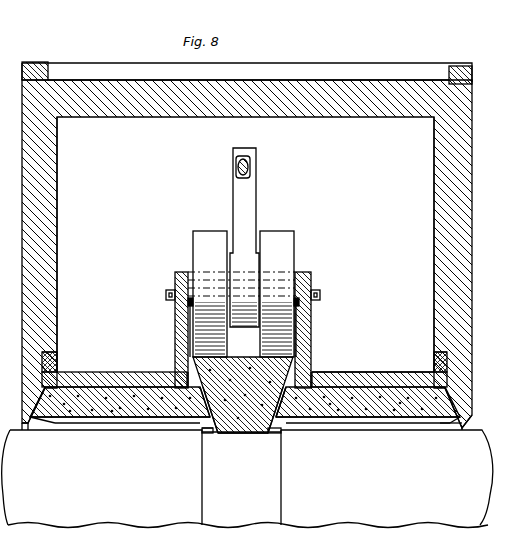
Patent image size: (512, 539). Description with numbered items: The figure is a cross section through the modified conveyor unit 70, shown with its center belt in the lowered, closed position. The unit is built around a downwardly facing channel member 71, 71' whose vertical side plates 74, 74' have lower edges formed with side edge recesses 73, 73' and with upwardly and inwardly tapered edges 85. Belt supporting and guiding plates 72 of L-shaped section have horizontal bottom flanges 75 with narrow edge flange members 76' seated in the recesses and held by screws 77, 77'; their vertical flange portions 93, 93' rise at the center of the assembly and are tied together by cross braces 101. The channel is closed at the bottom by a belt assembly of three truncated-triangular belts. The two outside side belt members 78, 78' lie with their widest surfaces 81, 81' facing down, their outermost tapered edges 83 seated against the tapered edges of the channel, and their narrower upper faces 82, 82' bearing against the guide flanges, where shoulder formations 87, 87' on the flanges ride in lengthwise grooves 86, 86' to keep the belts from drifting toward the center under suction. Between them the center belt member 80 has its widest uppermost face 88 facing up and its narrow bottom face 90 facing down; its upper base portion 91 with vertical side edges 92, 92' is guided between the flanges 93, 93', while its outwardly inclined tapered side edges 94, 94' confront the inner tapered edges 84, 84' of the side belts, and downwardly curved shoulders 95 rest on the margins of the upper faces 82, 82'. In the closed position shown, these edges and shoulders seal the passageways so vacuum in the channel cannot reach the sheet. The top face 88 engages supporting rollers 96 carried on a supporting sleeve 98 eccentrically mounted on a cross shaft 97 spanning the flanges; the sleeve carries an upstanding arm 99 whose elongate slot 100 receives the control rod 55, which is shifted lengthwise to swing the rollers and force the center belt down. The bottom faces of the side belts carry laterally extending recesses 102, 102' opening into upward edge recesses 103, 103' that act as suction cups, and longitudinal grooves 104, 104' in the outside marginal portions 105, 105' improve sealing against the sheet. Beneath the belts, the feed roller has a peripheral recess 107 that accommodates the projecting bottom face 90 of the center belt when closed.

The control rod 55 is at (250, 166).
The modified conveyor unit 70 is at (22, 166).
The channel member 71 is at (258, 119).
The channel member 71' is at (224, 138).
The belt supporting and guiding plate 72 is at (350, 375).
The side edge recess 73 is at (427, 353).
The side edge recess 73' is at (62, 338).
The side plate 74 is at (464, 244).
The side plate 74' is at (28, 244).
The bottom flange 75 is at (390, 365).
The edge flange member 76' is at (64, 357).
The screw 77 is at (470, 383).
The screw 77' is at (22, 374).
The side belt member 78 is at (368, 436).
The side belt member 78' is at (127, 434).
The center belt member 80 is at (237, 430).
The widest surface 81 is at (250, 479).
The widest surface 81' is at (102, 477).
The upper face 82 is at (345, 387).
The upper face 82' is at (120, 369).
The outermost tapered edge 83 is at (466, 386).
The inner tapered edge 84 is at (268, 423).
The inner tapered edge 84' is at (174, 421).
The tapered edge 85 is at (462, 416).
The groove 86 is at (379, 372).
The groove 86' is at (114, 370).
The shoulder formation 87 is at (366, 384).
The shoulder formation 87' is at (120, 381).
The uppermost face 88 is at (241, 355).
The bottom face 90 is at (214, 438).
The upper base portion 91 is at (314, 330).
The vertical side edge 92 is at (323, 333).
The vertical side edge 92' is at (169, 327).
The vertical flange portion 93 is at (327, 330).
The vertical flange portion 93' is at (163, 318).
The tapered side edge 94 is at (286, 445).
The tapered side edge 94' is at (190, 451).
The curved shoulder 95 is at (188, 378).
The supporting roller 96 is at (208, 238).
The cross shaft 97 is at (316, 288).
The supporting sleeve 98 is at (270, 283).
The upstanding arm 99 is at (253, 192).
The elongate slot 100 is at (238, 183).
The cross brace 101 is at (189, 304).
The recess 102 is at (422, 438).
The recess 102' is at (61, 440).
The edge recess 103 is at (308, 430).
The edge recess 103' is at (186, 419).
The longitudinal groove 104 is at (455, 456).
The longitudinal groove 104' is at (18, 451).
The outside marginal portion 105 is at (464, 447).
The outside marginal portion 105' is at (44, 439).
The peripheral recess 107 is at (222, 464).